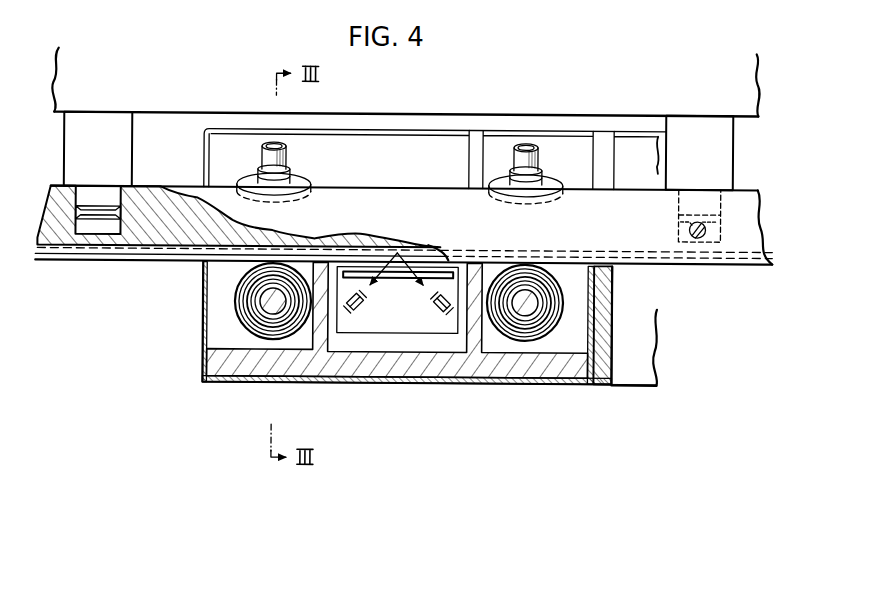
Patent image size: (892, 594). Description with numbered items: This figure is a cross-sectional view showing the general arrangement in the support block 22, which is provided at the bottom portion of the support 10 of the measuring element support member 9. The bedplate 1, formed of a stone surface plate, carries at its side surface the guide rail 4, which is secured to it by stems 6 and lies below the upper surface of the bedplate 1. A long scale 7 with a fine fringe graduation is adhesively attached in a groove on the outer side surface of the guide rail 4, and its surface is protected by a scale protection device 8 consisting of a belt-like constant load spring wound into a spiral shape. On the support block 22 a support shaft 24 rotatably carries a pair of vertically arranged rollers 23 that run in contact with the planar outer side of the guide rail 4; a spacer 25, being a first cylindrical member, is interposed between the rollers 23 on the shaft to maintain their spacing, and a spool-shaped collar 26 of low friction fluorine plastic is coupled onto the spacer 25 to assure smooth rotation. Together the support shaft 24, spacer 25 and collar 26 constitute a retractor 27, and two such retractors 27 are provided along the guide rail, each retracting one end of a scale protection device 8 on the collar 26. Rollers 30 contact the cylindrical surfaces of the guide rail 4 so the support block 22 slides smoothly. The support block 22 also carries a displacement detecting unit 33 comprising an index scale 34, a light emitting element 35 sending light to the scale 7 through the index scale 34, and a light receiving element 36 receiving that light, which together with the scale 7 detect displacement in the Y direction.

The bedplate 1 is at (737, 96).
The guide rail 4 is at (740, 233).
The stem 6 is at (80, 142).
The scale 7 is at (153, 256).
The scale protection device 8 is at (106, 251).
The measuring element support member 9 is at (664, 398).
The support 10 is at (616, 385).
The support block 22 is at (305, 362).
The roller 23 is at (205, 379).
The support shaft 24 is at (270, 299).
The spacer 25 is at (260, 314).
The spool-shaped collar 26 is at (275, 318).
The retractor 27 is at (228, 323).
The roller 30 is at (300, 174).
The displacement detecting unit 33 is at (419, 340).
The index scale 34 is at (397, 256).
The light emitting element 35 is at (364, 313).
The light receiving element 36 is at (434, 313).